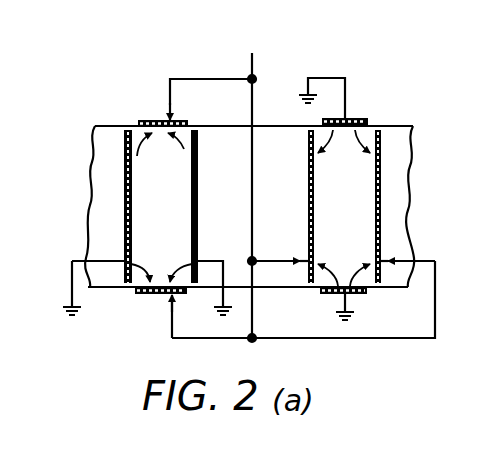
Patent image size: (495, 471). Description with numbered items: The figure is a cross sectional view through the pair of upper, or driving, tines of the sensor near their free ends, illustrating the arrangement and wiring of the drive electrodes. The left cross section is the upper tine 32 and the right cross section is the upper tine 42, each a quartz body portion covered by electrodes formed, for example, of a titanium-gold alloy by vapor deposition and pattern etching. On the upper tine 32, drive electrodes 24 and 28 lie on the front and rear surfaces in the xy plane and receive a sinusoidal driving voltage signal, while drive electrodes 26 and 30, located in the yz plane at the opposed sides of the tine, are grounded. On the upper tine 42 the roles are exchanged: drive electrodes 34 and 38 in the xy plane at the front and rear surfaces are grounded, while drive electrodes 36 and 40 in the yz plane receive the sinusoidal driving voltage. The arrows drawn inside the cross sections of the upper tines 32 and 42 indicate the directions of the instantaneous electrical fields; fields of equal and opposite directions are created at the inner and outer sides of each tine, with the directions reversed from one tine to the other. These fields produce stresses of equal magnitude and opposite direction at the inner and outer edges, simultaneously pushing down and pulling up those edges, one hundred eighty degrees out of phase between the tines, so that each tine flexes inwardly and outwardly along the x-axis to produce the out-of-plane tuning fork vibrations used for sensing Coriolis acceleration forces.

The drive electrode 24 is at (152, 295).
The drive electrode 26 is at (195, 173).
The drive electrode 28 is at (146, 119).
The drive electrode 30 is at (124, 168).
The upper tine 32 is at (136, 205).
The drive electrode 34 is at (360, 295).
The drive electrode 36 is at (381, 173).
The drive electrode 38 is at (358, 118).
The drive electrode 40 is at (309, 173).
The upper tine 42 is at (361, 198).